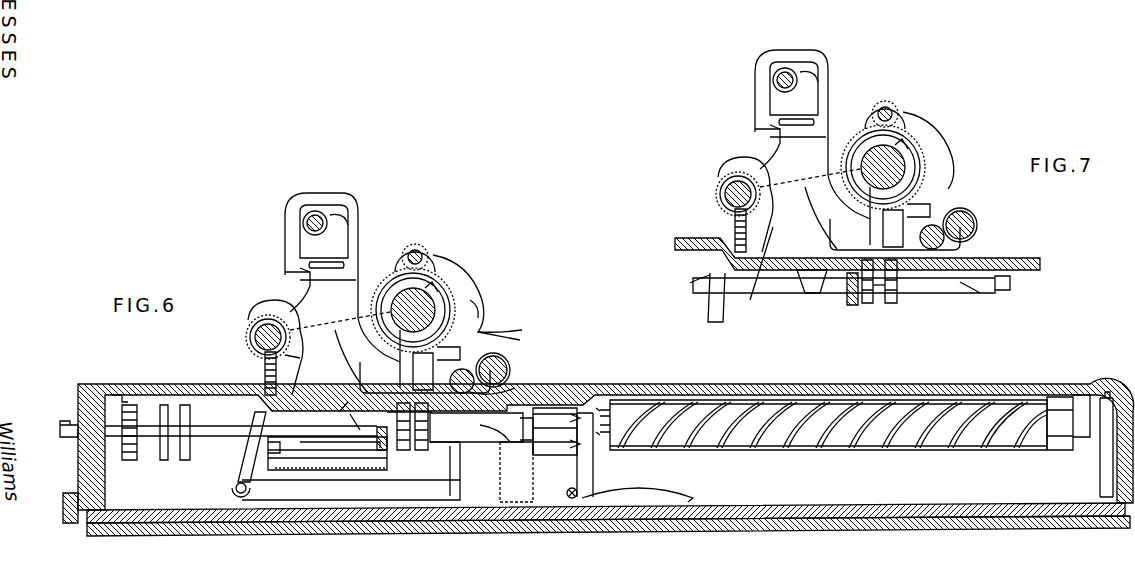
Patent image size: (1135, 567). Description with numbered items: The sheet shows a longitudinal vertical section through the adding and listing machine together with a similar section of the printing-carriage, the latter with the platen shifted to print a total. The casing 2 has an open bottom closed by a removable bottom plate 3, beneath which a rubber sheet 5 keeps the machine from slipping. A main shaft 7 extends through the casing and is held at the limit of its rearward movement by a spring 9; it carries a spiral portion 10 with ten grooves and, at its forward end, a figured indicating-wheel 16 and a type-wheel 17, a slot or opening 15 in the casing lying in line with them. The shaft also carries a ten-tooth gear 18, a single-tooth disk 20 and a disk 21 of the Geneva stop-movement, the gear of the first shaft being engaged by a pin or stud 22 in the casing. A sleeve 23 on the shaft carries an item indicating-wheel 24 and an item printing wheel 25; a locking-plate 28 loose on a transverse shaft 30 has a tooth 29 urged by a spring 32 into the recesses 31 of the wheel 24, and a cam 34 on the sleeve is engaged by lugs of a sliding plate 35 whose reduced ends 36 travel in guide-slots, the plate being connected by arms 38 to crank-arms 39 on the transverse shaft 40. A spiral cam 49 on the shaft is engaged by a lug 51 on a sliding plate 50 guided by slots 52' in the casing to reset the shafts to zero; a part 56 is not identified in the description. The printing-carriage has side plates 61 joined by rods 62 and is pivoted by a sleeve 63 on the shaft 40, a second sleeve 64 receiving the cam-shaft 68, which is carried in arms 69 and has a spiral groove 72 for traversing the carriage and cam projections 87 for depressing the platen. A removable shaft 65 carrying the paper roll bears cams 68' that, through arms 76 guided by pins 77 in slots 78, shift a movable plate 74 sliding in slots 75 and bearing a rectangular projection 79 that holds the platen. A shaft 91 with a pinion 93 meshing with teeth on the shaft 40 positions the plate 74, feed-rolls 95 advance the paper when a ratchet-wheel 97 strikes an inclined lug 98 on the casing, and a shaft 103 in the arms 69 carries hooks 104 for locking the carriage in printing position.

In FIG. 6, the casing 2 is at (982, 384).
In FIG. 6, the bottom plate 3 is at (718, 512).
In FIG. 6, the rubber sheet 5 is at (776, 530).
In FIG. 6, the main shaft 7 is at (70, 433).
In FIG. 6, the spring 9 is at (1108, 448).
In FIG. 6, the spiral portion 10 is at (792, 440).
In FIG. 6, the slot or opening 15 is at (430, 414).
In FIG. 7, the slot or opening 15 is at (900, 282).
In FIG. 6, the figured indicating-wheel 16 is at (1060, 440).
In FIG. 6, the type-wheel 17 is at (403, 452).
In FIG. 7, the type-wheel 17 is at (868, 305).
In FIG. 6, the ten-tooth gear 18 is at (130, 458).
In FIG. 6, the disk 20 is at (164, 460).
In FIG. 6, the disk 21 is at (185, 460).
In FIG. 6, the pin or stud 22 is at (130, 400).
In FIG. 7, the sleeve 23 is at (952, 294).
In FIG. 6, the figured indicating-wheel 24 is at (560, 446).
In FIG. 6, the printing wheel 25 is at (424, 452).
In FIG. 7, the printing wheel 25 is at (890, 302).
In FIG. 6, the locking-plate 28 is at (594, 457).
In FIG. 6, the tooth 29 is at (614, 424).
In FIG. 6, the transverse shaft 30 is at (578, 500).
In FIG. 6, the slots or recesses 31 is at (616, 411).
In FIG. 6, the spring 32 is at (650, 495).
In FIG. 6, the cam 34 is at (510, 440).
In FIG. 7, the cam 34 is at (995, 292).
In FIG. 6, the sliding plate 35 is at (505, 442).
In FIG. 6, the reduced ends 36 is at (476, 427).
In FIG. 6, the arms 38 is at (353, 490).
In FIG. 6, the crank-arms 39 is at (240, 458).
In FIG. 6, the transverse shaft 40 is at (262, 328).
In FIG. 7, the transverse shaft 40 is at (730, 185).
In FIG. 6, the spiral cam 49 is at (348, 415).
In FIG. 7, the spiral cam 49 is at (812, 294).
In FIG. 6, the sliding plates 50 is at (318, 470).
In FIG. 6, the lugs or projections 51 is at (333, 432).
In FIG. 6, the slots 52' is at (229, 489).
In FIG. 6, the plate 56 is at (528, 470).
In FIG. 6, the side plates 61 is at (380, 253).
In FIG. 7, the side plates 61 is at (855, 105).
In FIG. 6, the bolts or rods 62 is at (400, 360).
In FIG. 7, the bolts or rods 62 is at (830, 240).
In FIG. 6, the sleeve 63 is at (282, 318).
In FIG. 7, the sleeve 63 is at (720, 180).
In FIG. 6, the sleeve 64 is at (470, 281).
In FIG. 7, the sleeve 64 is at (926, 150).
In FIG. 6, the removable shaft 65 is at (318, 216).
In FIG. 7, the removable shaft 65 is at (790, 76).
In FIG. 6, the cam-shaft 68 is at (439, 291).
In FIG. 7, the cam-shaft 68 is at (911, 167).
In FIG. 6, the lug or cam 68' is at (371, 195).
In FIG. 7, the lug or cam 68' is at (788, 46).
In FIG. 6, the arms 69 is at (340, 332).
In FIG. 7, the arms 69 is at (820, 152).
In FIG. 6, the spiral groove 72 is at (440, 320).
In FIG. 6, the movable plate 74 is at (508, 366).
In FIG. 7, the movable plate 74 is at (775, 302).
In FIG. 6, the slots 75 is at (448, 382).
In FIG. 7, the slots 75 is at (930, 228).
In FIG. 6, the arms 76 is at (350, 287).
In FIG. 7, the arms 76 is at (808, 168).
In FIG. 6, the guide-pins 77 is at (302, 268).
In FIG. 7, the guide-pins 77 is at (775, 125).
In FIG. 6, the slots 78 is at (308, 266).
In FIG. 7, the slots 78 is at (778, 124).
In FIG. 6, the rectangular projection 79 is at (458, 352).
In FIG. 7, the rectangular projection 79 is at (848, 213).
In FIG. 6, the cam projections 87 is at (430, 293).
In FIG. 7, the cam projections 87 is at (906, 150).
In FIG. 6, the shaft 91 is at (298, 352).
In FIG. 7, the shaft 91 is at (759, 276).
In FIG. 6, the pinion 93 is at (264, 376).
In FIG. 7, the pinion 93 is at (734, 228).
In FIG. 6, the feed-rolls 95 is at (504, 382).
In FIG. 7, the feed-rolls 95 is at (975, 222).
In FIG. 7, the ratchet-wheel 97 is at (1025, 260).
In FIG. 6, the inclined lug 98 is at (528, 388).
In FIG. 7, the inclined lug 98 is at (1012, 271).
In FIG. 6, the shaft 103 is at (418, 250).
In FIG. 7, the shaft 103 is at (890, 110).
In FIG. 6, the hooks 104 is at (484, 306).